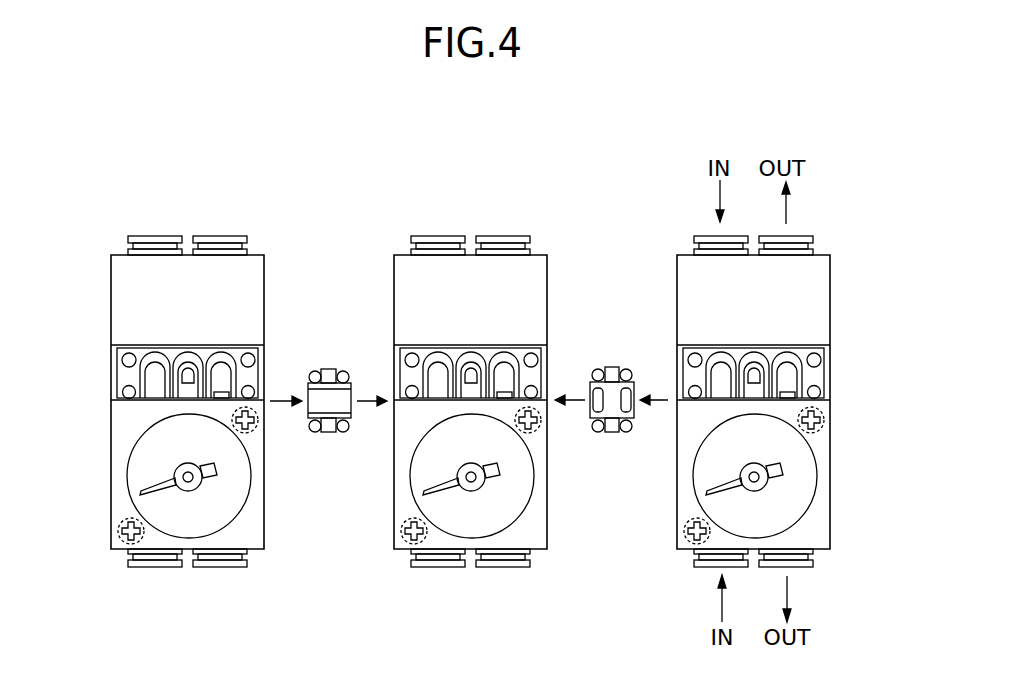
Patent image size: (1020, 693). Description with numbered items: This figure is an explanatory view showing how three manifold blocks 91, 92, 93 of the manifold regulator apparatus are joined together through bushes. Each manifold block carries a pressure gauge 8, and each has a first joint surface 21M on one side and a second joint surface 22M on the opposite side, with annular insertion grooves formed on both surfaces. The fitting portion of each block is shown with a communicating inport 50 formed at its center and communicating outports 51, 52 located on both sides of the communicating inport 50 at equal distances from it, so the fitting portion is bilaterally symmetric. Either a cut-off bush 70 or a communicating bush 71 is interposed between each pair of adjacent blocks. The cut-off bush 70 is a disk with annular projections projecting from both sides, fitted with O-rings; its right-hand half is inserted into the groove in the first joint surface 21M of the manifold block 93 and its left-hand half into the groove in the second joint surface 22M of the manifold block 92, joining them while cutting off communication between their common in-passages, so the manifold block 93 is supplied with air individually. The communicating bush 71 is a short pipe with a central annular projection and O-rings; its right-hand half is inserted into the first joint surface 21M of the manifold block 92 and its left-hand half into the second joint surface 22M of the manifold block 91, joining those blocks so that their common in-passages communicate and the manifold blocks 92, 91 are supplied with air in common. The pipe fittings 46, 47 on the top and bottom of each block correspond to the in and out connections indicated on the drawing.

The pressure gauge 8 is at (232, 497).
The first joint surface 21M is at (111, 318).
The second joint surface 22M is at (265, 312).
The inlet pipe fitting 46 is at (156, 230).
The outlet pipe fitting 47 is at (236, 230).
The communicating inport 50 is at (185, 370).
The communicating outport 51 is at (150, 382).
The communicating outport 52 is at (222, 370).
The cut-off bush 70 is at (612, 430).
The communicating bush 71 is at (330, 430).
The manifold block 91 is at (105, 559).
The manifold block 92 is at (388, 559).
The manifold block 93 is at (669, 557).